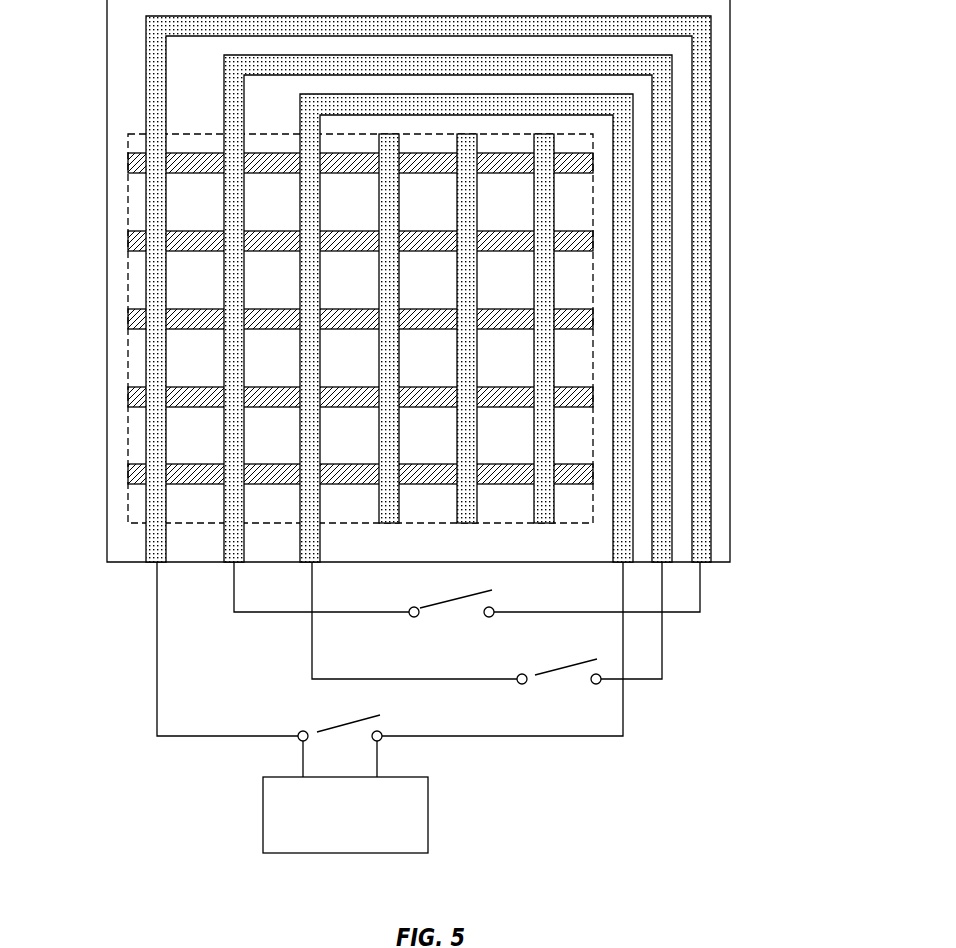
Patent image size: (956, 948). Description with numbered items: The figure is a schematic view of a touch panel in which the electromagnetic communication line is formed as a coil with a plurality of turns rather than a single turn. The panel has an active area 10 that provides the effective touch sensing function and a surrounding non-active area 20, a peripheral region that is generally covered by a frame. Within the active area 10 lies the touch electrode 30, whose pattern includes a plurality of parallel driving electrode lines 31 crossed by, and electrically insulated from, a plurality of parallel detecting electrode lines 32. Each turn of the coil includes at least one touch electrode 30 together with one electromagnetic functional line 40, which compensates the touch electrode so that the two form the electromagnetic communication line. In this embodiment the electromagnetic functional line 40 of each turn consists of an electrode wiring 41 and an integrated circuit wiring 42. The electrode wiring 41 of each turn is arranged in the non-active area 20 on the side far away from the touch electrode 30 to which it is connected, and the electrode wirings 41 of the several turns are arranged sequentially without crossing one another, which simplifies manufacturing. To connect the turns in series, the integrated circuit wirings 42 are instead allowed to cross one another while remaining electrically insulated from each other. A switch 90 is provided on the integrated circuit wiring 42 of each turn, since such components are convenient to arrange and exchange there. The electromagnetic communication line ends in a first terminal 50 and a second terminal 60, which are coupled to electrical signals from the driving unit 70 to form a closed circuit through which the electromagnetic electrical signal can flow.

The active area 10 is at (137, 445).
The non-active area 20 is at (115, 398).
The touch electrode 30 is at (300, 328).
The driving electrode lines 31 is at (152, 192).
The detecting electrode lines 32 is at (137, 240).
The electromagnetic functional line 40 is at (498, 376).
The electrode wiring 41 is at (625, 437).
The integrated circuit wiring 42 is at (623, 697).
The first terminal 50 is at (303, 743).
The second terminal 60 is at (380, 743).
The driving unit 70 is at (377, 825).
The switch 90 is at (448, 603).